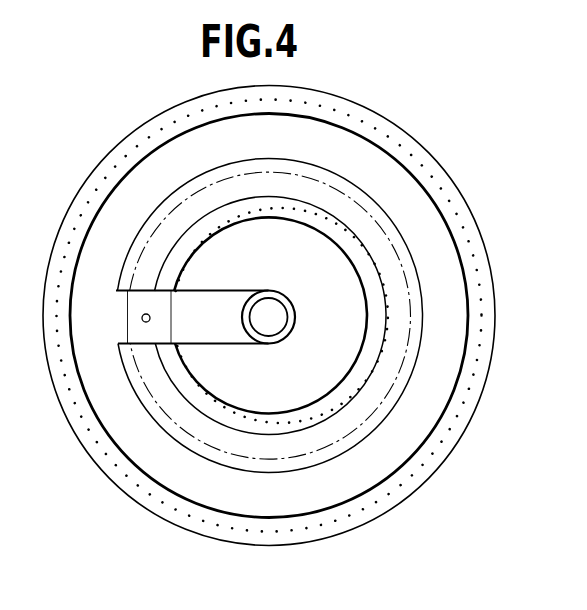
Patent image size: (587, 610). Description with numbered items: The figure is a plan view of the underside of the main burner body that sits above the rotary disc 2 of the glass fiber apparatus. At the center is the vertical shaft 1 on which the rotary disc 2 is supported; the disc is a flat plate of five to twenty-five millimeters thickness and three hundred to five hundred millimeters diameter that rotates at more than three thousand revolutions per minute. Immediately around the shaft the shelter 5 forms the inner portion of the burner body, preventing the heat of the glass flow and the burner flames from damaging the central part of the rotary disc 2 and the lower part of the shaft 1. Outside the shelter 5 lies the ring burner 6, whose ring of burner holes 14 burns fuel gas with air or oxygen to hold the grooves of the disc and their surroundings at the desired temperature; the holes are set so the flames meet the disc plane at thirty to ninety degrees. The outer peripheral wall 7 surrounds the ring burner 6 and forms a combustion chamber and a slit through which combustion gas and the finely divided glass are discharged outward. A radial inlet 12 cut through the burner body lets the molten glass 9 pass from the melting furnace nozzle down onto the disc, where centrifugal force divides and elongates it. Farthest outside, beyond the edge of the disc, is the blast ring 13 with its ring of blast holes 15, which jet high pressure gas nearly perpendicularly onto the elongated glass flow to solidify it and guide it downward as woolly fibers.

The vertical shaft 1 is at (267, 325).
The rotary disc 2 is at (387, 397).
The shelter 5 is at (188, 383).
The ring burner 6 is at (232, 427).
The outer peripheral wall 7 is at (279, 468).
The molten glass 9 is at (141, 318).
The inlet 12 is at (137, 292).
The blast ring 13 is at (486, 352).
The burner holes 14 is at (372, 312).
The blast holes 15 is at (471, 257).